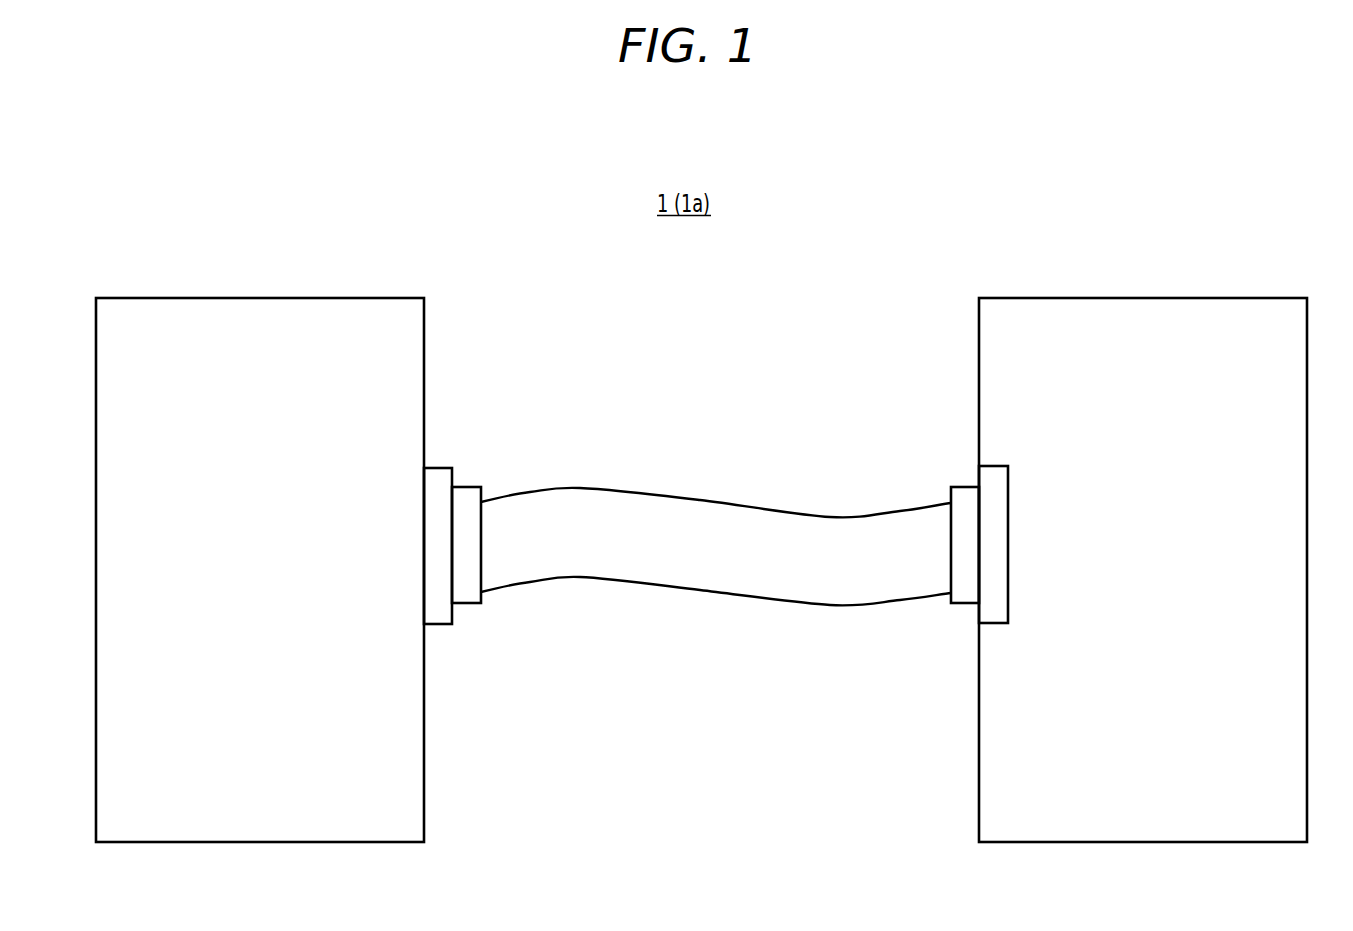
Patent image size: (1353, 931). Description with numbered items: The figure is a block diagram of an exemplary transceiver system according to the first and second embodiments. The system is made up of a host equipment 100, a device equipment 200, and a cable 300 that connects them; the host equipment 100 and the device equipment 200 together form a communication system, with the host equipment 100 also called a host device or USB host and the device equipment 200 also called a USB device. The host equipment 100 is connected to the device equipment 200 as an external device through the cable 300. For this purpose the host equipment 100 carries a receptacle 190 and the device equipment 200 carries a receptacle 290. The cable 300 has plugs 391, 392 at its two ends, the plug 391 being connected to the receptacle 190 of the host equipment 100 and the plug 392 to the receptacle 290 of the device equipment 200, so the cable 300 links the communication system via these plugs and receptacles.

The host equipment 100 is at (336, 297).
The device equipment 200 is at (1093, 297).
The receptacle 190 is at (440, 468).
The receptacle 290 is at (1002, 466).
The cable 300 is at (636, 490).
The plug 391 is at (473, 487).
The plug 392 is at (960, 487).